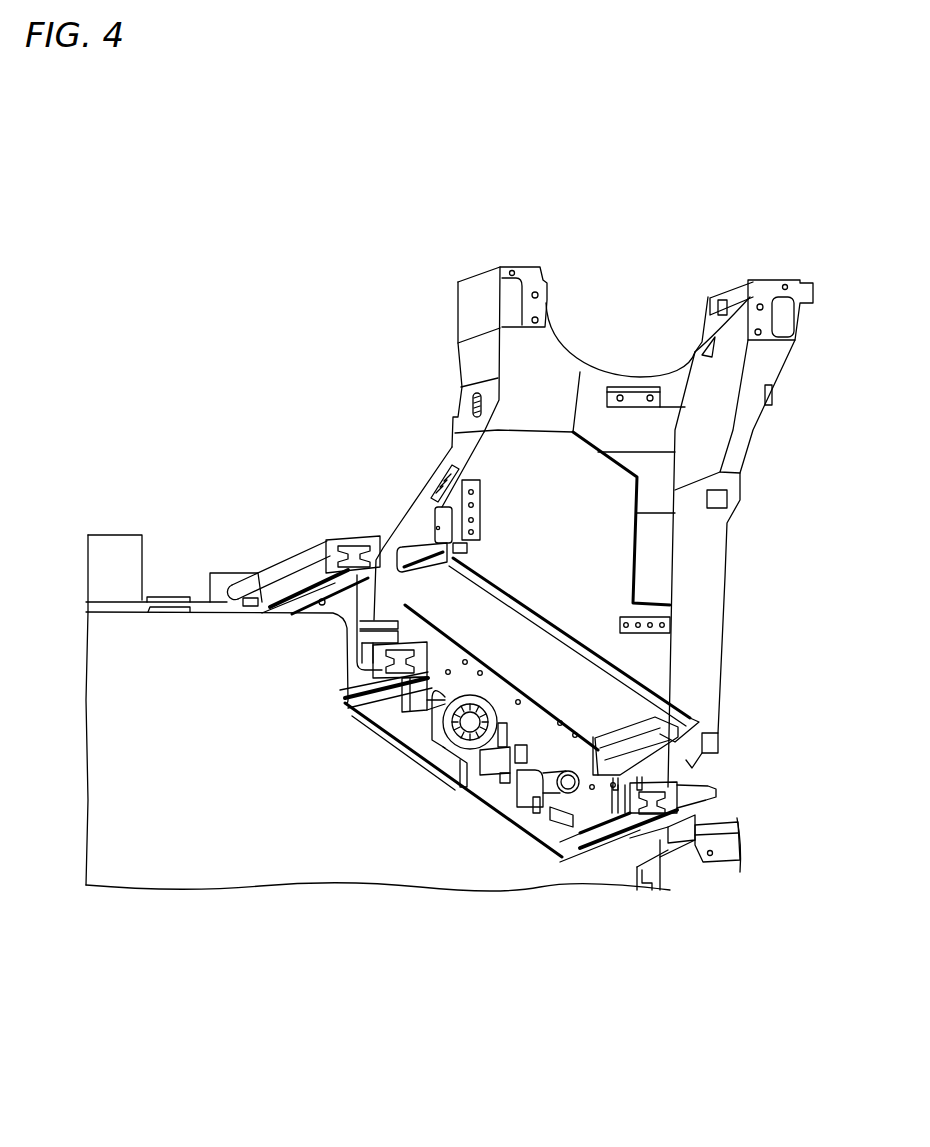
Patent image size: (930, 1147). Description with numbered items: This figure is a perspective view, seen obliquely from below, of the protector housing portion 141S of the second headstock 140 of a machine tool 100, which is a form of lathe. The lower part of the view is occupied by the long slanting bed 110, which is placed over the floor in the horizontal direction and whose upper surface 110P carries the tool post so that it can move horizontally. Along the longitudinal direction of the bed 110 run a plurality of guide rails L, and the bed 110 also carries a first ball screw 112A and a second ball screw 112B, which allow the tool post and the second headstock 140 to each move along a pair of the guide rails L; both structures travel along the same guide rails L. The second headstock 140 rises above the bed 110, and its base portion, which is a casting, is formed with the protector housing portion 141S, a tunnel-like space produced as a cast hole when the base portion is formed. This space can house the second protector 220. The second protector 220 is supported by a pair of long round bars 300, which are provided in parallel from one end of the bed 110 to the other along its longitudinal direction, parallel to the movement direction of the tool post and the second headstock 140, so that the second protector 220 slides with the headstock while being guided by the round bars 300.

The machine tool 100 is at (323, 314).
The second headstock 140 is at (670, 388).
The protector housing portion 141S is at (409, 553).
The guide rails L is at (383, 670).
The round bars 300 is at (420, 570).
The second protector 220 is at (630, 673).
The bed 110 is at (488, 866).
The upper surface of the bed 110P is at (488, 785).
The first ball screw 112A is at (533, 803).
The second ball screw 112B is at (400, 752).